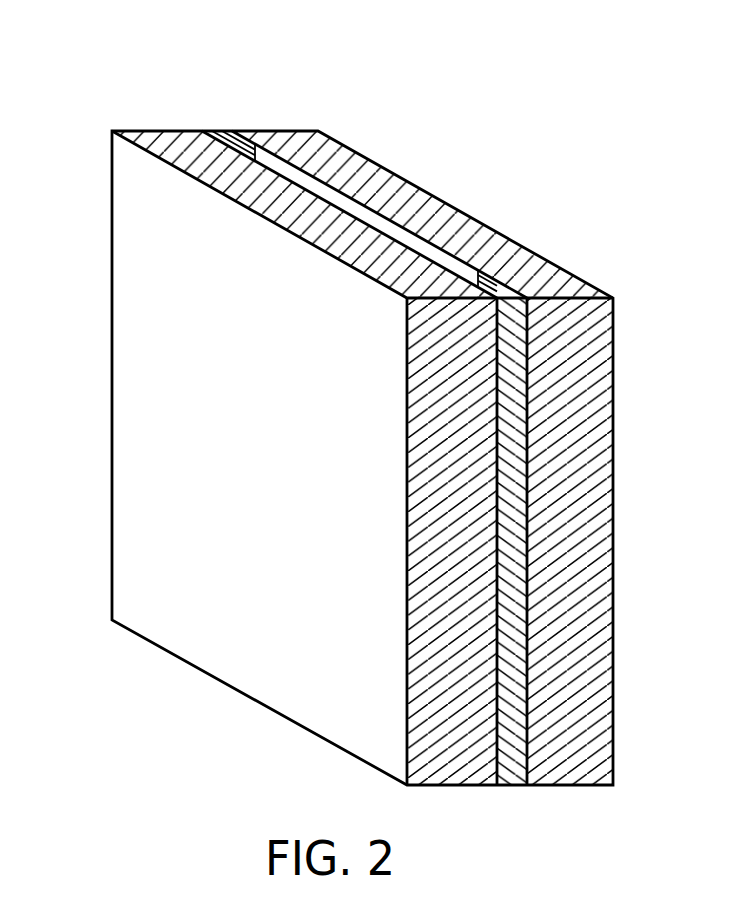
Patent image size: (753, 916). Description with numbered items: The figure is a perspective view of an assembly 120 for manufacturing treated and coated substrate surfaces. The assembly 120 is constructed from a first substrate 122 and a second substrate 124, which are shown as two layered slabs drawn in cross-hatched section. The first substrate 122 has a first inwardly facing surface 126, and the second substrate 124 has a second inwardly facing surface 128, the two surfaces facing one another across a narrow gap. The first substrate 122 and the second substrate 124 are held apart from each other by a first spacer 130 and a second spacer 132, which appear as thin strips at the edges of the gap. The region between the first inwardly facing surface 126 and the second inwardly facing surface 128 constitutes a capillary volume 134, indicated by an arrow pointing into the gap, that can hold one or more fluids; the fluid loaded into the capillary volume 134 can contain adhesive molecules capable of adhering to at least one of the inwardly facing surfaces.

The assembly 120 is at (203, 722).
The first substrate 122 is at (182, 158).
The second substrate 124 is at (420, 200).
The first inwardly facing surface 126 is at (280, 176).
The second inwardly facing surface 128 is at (376, 216).
The first spacer 130 is at (235, 131).
The second spacer 132 is at (520, 329).
The capillary volume 134 is at (464, 256).